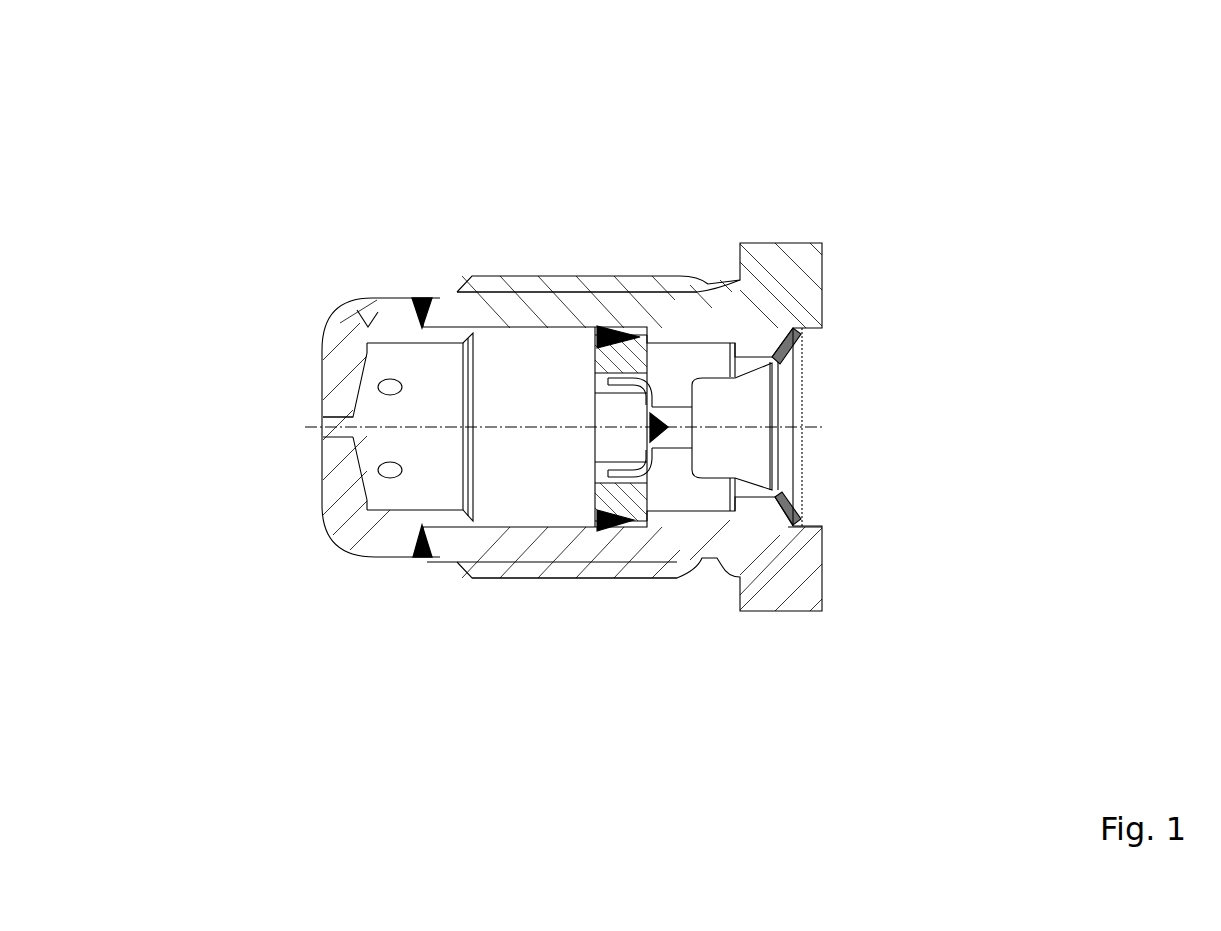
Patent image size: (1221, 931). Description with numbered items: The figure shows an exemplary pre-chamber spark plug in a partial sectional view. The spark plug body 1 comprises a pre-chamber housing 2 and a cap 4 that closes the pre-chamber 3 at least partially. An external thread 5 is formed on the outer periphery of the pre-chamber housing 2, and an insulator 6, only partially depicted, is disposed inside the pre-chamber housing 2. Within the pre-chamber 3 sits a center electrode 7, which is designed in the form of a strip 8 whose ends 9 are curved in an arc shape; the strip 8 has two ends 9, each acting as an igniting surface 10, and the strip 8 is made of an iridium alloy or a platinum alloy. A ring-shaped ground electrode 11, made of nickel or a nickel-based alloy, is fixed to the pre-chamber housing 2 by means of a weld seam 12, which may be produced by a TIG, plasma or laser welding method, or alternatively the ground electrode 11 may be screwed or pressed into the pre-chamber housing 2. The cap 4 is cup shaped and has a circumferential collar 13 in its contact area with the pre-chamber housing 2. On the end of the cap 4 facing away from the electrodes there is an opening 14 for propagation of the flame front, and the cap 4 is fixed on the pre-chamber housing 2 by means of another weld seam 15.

The spark plug body 1 is at (745, 108).
The pre-chamber housing 2 is at (697, 303).
The pre-chamber 3 is at (515, 497).
The cap 4 is at (333, 325).
The external thread 5 is at (541, 566).
The insulator 6 is at (765, 395).
The center electrode 7 is at (605, 437).
The strip 8 is at (672, 427).
The ends 9 is at (598, 366).
The igniting surface 10 is at (613, 489).
The ground electrode 11 is at (628, 348).
The weld seam 12 is at (596, 330).
The circumferential collar 13 is at (447, 518).
The opening 14 is at (345, 431).
The weld seam 15 is at (420, 316).